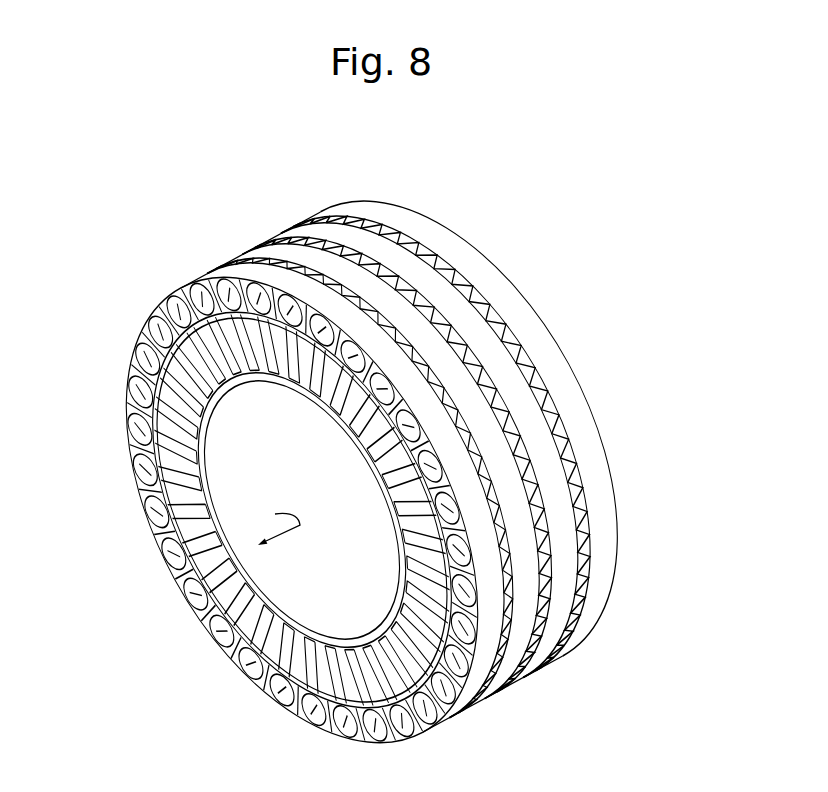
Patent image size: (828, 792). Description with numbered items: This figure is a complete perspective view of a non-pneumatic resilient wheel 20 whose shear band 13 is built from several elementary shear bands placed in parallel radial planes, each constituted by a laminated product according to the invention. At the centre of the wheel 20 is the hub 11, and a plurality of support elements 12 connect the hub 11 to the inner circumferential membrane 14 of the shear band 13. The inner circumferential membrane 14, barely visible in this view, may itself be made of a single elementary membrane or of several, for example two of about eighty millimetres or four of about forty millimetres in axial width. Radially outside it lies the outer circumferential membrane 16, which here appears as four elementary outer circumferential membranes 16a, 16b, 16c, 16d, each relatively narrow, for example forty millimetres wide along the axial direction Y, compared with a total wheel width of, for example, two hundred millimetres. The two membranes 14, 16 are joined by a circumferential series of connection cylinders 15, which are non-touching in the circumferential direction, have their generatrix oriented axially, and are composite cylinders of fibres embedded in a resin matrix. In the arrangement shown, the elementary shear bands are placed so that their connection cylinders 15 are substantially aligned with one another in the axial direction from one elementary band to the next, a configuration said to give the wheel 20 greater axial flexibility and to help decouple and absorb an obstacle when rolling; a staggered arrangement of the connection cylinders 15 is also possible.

The hub 11 is at (300, 633).
The support elements 12 is at (185, 445).
The shear band 13 is at (247, 677).
The inner circumferential membrane 14 is at (146, 480).
The connection cylinders 15 is at (182, 608).
The outer circumferential membrane 16 is at (146, 313).
The elementary outer circumferential membrane 16a is at (370, 340).
The elementary outer circumferential membrane 16b is at (427, 341).
The elementary outer circumferential membrane 16c is at (483, 342).
The elementary outer circumferential membrane 16d is at (540, 342).
The non-pneumatic wheel 20 is at (254, 212).